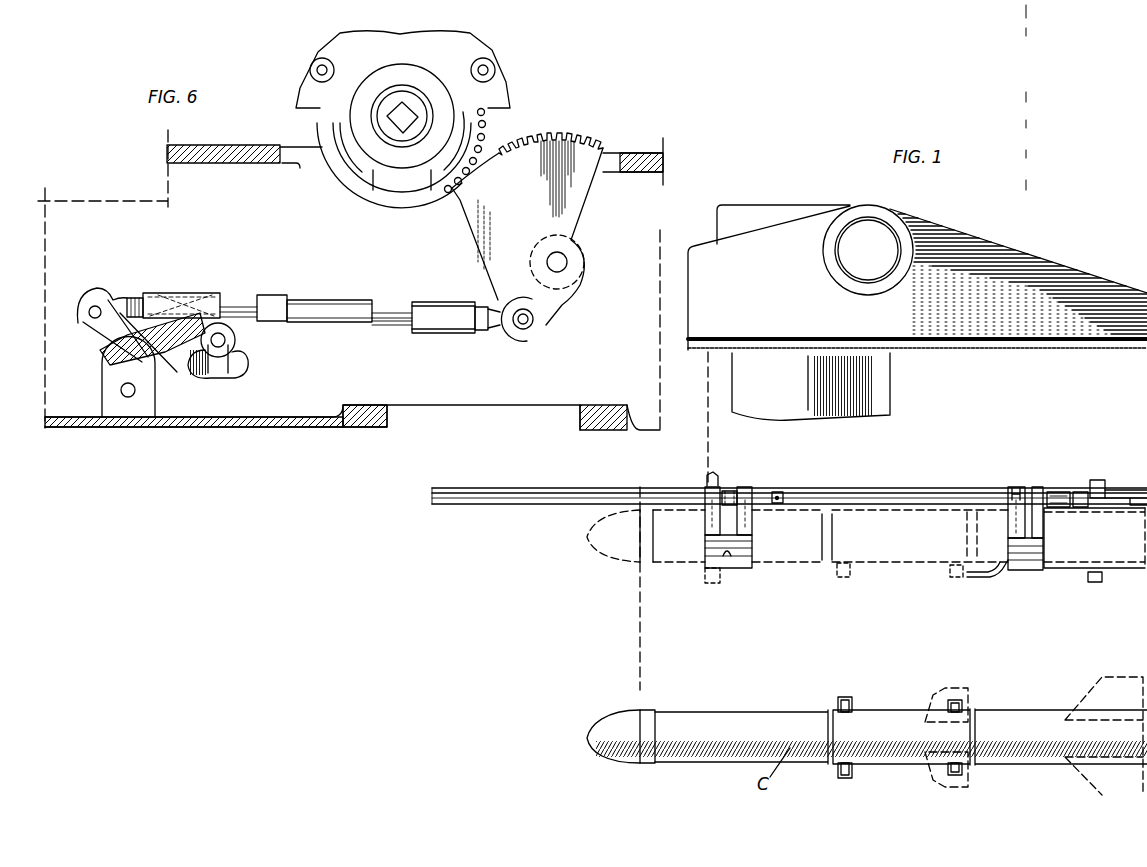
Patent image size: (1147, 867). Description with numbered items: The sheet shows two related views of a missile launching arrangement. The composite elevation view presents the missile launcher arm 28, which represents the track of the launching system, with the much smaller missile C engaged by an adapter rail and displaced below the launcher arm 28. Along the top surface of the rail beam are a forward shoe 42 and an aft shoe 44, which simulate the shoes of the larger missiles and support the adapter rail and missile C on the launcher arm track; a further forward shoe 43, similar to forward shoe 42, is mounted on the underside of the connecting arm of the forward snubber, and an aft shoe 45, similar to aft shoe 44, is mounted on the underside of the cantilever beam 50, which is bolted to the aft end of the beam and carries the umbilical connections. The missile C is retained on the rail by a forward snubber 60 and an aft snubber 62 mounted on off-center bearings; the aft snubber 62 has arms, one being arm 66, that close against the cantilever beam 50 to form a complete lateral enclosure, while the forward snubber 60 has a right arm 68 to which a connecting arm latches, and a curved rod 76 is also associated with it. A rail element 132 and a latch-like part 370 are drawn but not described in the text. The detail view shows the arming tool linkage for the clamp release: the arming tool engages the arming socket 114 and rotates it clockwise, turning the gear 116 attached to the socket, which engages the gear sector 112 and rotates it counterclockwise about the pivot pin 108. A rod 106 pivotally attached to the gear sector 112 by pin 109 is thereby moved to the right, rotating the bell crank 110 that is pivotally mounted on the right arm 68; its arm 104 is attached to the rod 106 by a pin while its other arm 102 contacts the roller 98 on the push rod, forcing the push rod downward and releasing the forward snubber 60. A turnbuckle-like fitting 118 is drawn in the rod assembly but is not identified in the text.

In FIG. 1, the missile launcher arm 28 is at (1068, 285).
In FIG. 1, the forward shoe 42 is at (717, 479).
In FIG. 1, the forward shoe 43 is at (710, 584).
In FIG. 1, the aft shoe 44 is at (1099, 490).
In FIG. 1, the aft shoe 45 is at (1097, 583).
In FIG. 1, the cantilever beam 50 is at (1073, 568).
In FIG. 1, the forward snubber 60 is at (740, 574).
In FIG. 1, the aft snubber 62 is at (1015, 489).
In FIG. 1, the arm 66 is at (1030, 571).
In FIG. 1, the curved rod 76 is at (736, 492).
In FIG. 1, the launch rail 132 is at (890, 497).
In FIG. 1, the latch hook 370 is at (980, 582).
In FIG. 6, the right arm 68 is at (257, 409).
In FIG. 6, the roller 98 is at (236, 338).
In FIG. 6, the arm 102 is at (170, 371).
In FIG. 6, the arm 104 is at (98, 333).
In FIG. 6, the rod 106 is at (283, 300).
In FIG. 6, the pivot pin 108 is at (560, 260).
In FIG. 6, the pin 109 is at (528, 320).
In FIG. 6, the bell crank 110 is at (102, 353).
In FIG. 6, the gear sector 112 is at (541, 203).
In FIG. 6, the arming socket 114 is at (401, 111).
In FIG. 6, the gear 116 is at (493, 120).
In FIG. 6, the turnbuckle 118 is at (362, 308).
In FIG. 1, the missile C is at (817, 545).